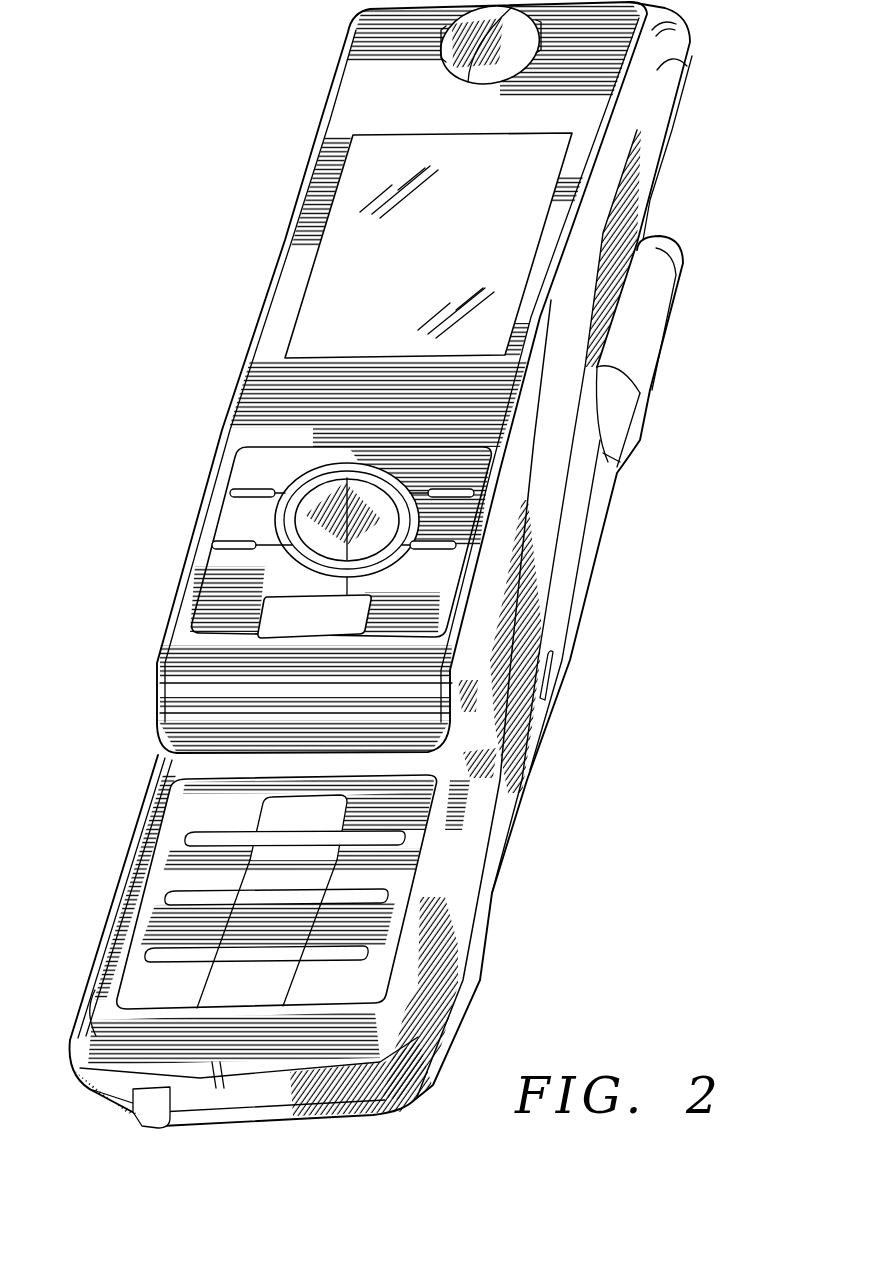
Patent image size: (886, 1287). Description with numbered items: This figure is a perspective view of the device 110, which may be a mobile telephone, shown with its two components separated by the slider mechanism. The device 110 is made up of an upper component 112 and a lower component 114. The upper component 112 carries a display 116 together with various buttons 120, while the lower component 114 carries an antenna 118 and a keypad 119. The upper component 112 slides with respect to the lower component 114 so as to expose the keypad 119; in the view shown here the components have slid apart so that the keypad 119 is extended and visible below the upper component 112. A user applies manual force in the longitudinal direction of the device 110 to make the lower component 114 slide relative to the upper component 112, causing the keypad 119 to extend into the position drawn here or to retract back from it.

The device 110 is at (240, 252).
The upper component 112 is at (263, 387).
The lower component 114 is at (150, 814).
The display 116 is at (358, 197).
The antenna 118 is at (655, 343).
The keypad 119 is at (157, 927).
The buttons 120 is at (282, 618).